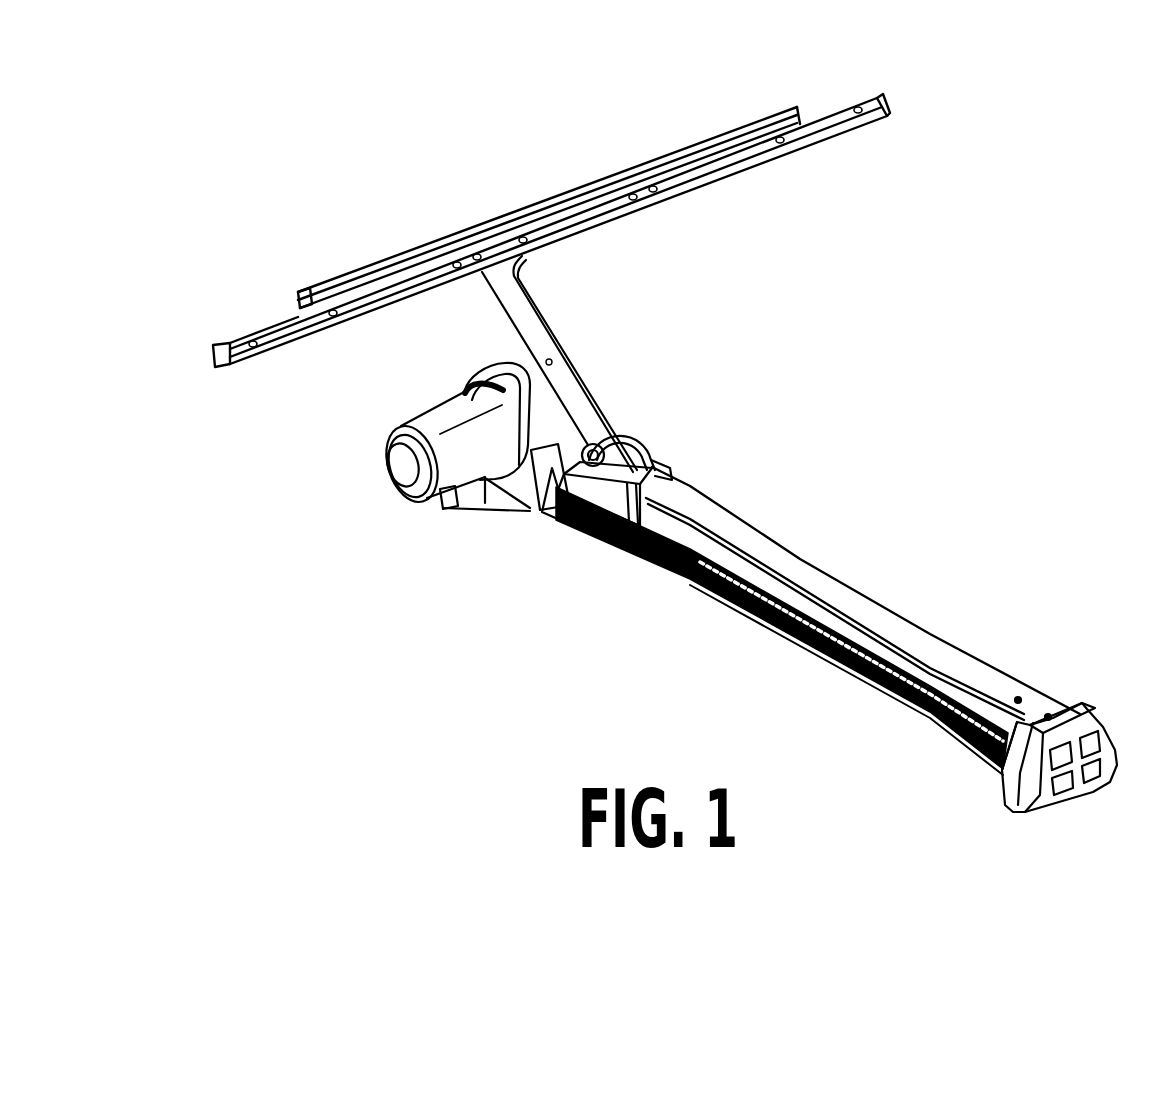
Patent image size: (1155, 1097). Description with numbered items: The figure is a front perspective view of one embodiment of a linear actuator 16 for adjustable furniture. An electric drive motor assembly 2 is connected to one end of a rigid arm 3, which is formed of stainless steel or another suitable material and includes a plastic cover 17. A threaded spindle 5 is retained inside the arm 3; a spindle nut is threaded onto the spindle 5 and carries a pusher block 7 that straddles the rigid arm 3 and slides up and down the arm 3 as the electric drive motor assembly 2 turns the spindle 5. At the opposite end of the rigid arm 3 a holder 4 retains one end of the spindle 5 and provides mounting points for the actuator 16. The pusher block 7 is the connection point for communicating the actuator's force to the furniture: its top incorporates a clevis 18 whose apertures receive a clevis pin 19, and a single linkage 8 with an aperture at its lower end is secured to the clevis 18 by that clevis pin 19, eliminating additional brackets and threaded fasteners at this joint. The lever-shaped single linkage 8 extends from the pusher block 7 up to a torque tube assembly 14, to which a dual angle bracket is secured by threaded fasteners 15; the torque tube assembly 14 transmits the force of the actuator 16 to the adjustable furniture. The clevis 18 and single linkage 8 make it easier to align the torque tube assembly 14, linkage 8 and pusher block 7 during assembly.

The electric drive motor assembly 2 is at (390, 428).
The rigid arm 3 is at (762, 559).
The holder 4 is at (1072, 730).
The threaded spindle 5 is at (840, 637).
The pusher block 7 is at (614, 526).
The single linkage 8 is at (525, 340).
The torque tube assembly 14 is at (815, 130).
The threaded fasteners 15 is at (520, 217).
The linear actuator 16 is at (941, 261).
The plastic cover 17 is at (880, 693).
The clevis 18 is at (655, 440).
The clevis pin 19 is at (621, 418).